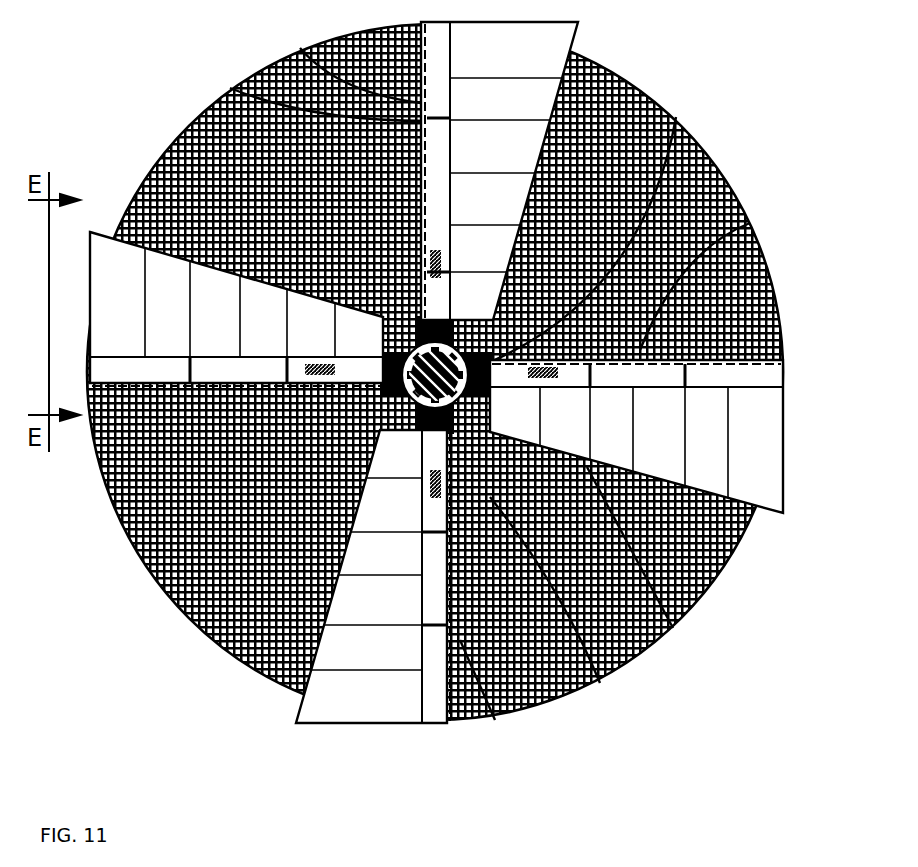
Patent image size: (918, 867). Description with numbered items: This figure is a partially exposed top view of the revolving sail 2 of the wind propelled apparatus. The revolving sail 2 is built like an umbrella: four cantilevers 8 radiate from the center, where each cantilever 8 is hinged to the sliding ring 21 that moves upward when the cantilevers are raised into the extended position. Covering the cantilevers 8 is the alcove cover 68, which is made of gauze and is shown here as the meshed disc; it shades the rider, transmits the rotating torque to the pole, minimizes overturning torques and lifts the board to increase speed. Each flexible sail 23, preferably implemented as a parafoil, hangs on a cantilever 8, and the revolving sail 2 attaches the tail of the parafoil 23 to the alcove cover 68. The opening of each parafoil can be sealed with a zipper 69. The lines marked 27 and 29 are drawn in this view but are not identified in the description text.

The revolving sail 2 is at (723, 148).
The cantilever 8 is at (300, 48).
The sliding ring 21 is at (677, 117).
The flexible sail 23 is at (165, 253).
The stiffening rod 27 is at (600, 683).
The edge reinforcement line 29 is at (230, 88).
The alcove cover 68 is at (673, 628).
The zipper 69 is at (495, 720).